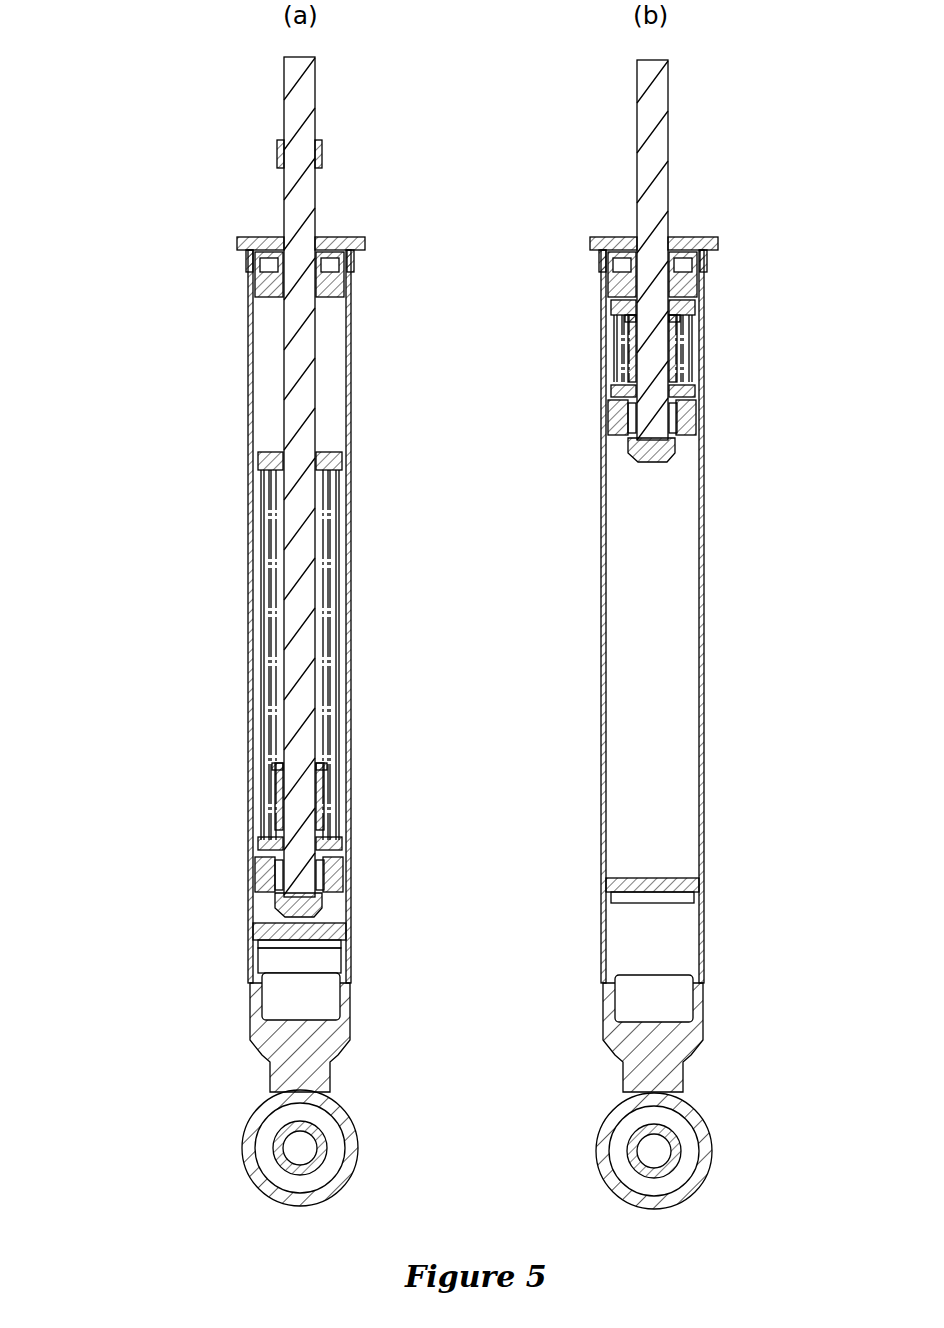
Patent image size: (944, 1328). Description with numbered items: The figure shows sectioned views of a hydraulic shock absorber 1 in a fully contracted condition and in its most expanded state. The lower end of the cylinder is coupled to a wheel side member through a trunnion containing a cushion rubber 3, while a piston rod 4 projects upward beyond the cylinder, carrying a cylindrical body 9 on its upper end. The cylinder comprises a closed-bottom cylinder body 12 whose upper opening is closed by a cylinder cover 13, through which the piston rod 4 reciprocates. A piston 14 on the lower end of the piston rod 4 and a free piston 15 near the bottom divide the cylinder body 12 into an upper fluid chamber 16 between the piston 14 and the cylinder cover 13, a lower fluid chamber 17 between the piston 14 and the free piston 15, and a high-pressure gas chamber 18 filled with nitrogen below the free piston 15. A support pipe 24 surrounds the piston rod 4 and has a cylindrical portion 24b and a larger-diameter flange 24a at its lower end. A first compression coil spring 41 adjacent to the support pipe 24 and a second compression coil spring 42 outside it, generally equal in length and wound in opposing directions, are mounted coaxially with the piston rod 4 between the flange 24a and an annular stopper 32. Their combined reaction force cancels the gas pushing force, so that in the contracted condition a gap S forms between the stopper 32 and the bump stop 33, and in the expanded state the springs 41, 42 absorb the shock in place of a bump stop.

The hydraulic shock absorber 1 is at (203, 307).
The cushion rubber 3 is at (258, 1140).
The piston rod 4 is at (318, 102).
The cylindrical body 9 is at (278, 152).
The cylinder body 12 is at (705, 572).
The cylinder cover 13 is at (352, 285).
The piston 14 is at (268, 883).
The free piston 15 is at (340, 970).
The upper fluid chamber 16 is at (345, 597).
The lower fluid chamber 17 is at (335, 908).
The high-pressure gas chamber 18 is at (275, 995).
The support pipe 24 is at (322, 803).
The flange 24a is at (345, 846).
The cylindrical portion 24b is at (330, 780).
The stopper 32 is at (345, 455).
The bump stop 33 is at (343, 295).
The first compression coil spring 41 is at (330, 648).
The second compression coil spring 42 is at (337, 695).
The gap S is at (330, 375).